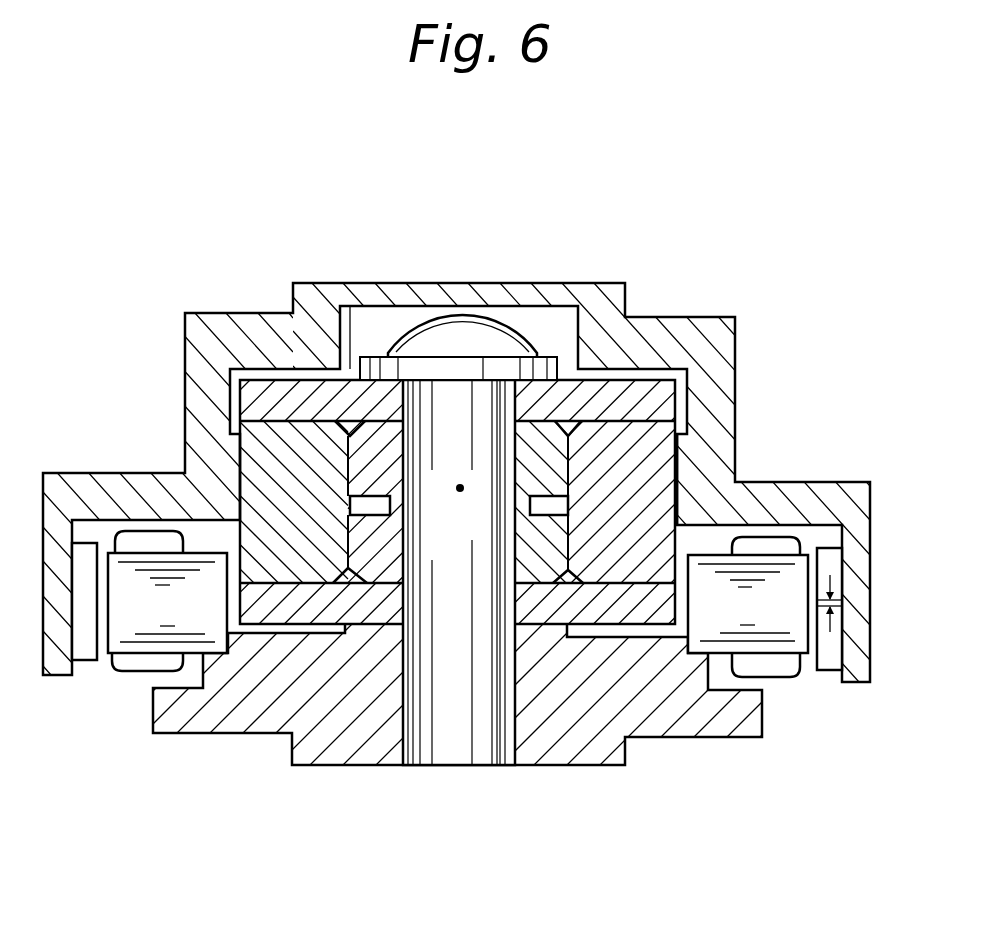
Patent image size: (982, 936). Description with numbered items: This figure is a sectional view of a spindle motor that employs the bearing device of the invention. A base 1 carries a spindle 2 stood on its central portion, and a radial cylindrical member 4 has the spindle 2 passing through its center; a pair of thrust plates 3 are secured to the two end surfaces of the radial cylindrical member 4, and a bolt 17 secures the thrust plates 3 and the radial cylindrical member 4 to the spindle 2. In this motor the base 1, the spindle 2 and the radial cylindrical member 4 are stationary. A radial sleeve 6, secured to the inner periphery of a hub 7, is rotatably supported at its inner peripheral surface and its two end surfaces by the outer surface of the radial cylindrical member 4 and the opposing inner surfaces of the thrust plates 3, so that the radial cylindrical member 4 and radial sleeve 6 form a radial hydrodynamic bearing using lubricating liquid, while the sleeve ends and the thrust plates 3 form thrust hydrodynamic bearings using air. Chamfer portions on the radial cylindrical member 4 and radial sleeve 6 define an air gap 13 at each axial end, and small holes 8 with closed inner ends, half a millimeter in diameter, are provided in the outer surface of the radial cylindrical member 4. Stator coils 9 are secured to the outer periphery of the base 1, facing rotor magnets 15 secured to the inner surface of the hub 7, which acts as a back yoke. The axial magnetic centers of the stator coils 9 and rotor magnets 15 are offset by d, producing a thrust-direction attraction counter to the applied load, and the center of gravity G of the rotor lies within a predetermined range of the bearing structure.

The base 1 is at (682, 703).
The spindle 2 is at (447, 733).
The thrust plates 3 is at (643, 392).
The radial cylindrical member 4 is at (653, 443).
The radial sleeve 6 is at (676, 444).
The hub 7 is at (713, 350).
The small holes 8 is at (357, 508).
The stator coils 9 is at (760, 623).
The air gap 13 is at (348, 421).
The rotor magnets 15 is at (827, 660).
The bolt 17 is at (472, 325).
The center of gravity G is at (457, 499).
The offset d is at (842, 603).